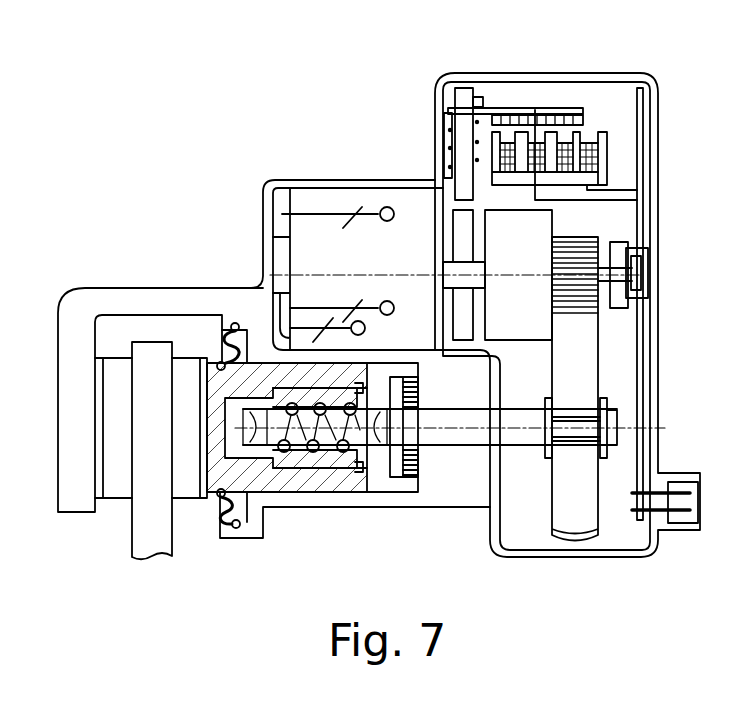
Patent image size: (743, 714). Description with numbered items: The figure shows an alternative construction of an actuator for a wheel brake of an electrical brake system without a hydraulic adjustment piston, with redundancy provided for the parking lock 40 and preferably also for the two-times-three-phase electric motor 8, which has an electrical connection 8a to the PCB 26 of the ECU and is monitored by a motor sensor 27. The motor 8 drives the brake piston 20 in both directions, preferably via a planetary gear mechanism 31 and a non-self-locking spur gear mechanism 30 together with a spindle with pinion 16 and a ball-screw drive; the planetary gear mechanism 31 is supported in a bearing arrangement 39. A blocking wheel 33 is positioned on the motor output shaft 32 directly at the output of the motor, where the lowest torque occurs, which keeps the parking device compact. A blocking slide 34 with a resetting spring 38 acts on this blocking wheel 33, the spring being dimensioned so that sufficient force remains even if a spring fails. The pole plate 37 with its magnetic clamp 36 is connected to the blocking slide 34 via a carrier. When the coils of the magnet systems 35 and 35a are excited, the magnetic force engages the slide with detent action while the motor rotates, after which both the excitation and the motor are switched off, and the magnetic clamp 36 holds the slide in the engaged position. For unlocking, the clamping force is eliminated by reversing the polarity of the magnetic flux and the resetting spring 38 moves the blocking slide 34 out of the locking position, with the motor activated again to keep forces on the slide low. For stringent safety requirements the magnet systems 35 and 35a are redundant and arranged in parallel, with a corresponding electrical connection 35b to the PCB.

The motor 8 is at (302, 203).
The electrical connection 8a is at (327, 217).
The spindle with pinion 16 is at (427, 437).
The brake piston 20 is at (309, 477).
The PCB of the ECU 26 is at (638, 370).
The motor sensor 27 is at (274, 274).
The non-self-locking spur gear mechanism 30 is at (585, 393).
The planetary gear mechanism 31 is at (530, 320).
The motor output shaft 32 is at (473, 323).
The blocking wheel 33 is at (457, 253).
The blocking slide 34 is at (465, 90).
The magnet system 1 with coil 35 is at (587, 133).
The magnet system 2 with coil 35a is at (535, 110).
The electrical connection to the PCB 35b is at (620, 203).
The magnetic clamp 36 is at (550, 112).
The pole plate to the blocking slide 37 is at (498, 110).
The resetting spring 38 is at (452, 148).
The bearing arrangement 39 is at (630, 270).
The parking lock 40 is at (607, 157).